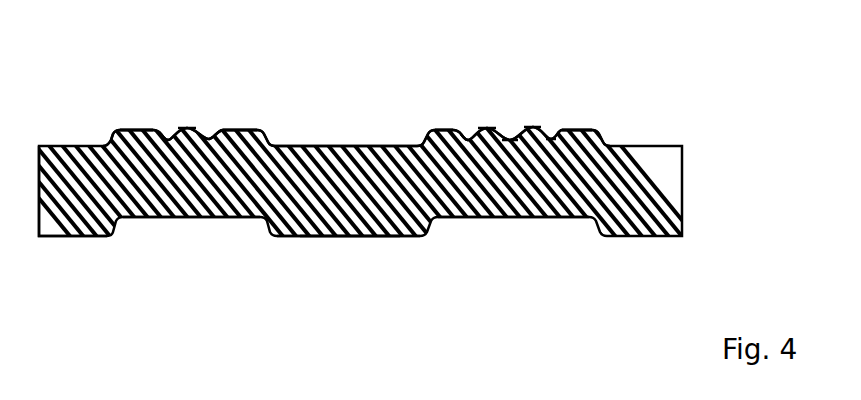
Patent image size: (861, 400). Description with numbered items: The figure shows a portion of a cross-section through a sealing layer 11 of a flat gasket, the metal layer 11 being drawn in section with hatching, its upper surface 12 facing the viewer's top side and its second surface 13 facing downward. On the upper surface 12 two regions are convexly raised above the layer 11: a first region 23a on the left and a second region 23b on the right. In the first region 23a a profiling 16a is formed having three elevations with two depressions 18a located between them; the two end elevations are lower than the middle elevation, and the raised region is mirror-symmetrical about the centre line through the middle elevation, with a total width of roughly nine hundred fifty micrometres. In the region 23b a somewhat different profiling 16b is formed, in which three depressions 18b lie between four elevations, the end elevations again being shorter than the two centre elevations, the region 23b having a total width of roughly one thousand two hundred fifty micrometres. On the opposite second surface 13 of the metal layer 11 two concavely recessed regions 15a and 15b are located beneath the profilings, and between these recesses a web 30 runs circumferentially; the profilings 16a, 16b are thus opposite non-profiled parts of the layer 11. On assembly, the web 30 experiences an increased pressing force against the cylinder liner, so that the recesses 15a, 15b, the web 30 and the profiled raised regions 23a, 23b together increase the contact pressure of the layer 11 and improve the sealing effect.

The metal layer 11 is at (287, 226).
The top surface of carrier 12 is at (326, 146).
The second surface 13 is at (63, 237).
The web 30 is at (338, 236).
The concavely recessed region 15a is at (232, 218).
The concavely recessed region 15b is at (463, 218).
The first region 23a is at (190, 130).
The region 23b is at (528, 129).
The profiling 16a is at (237, 129).
The profiling 16b is at (577, 129).
The depression 18a is at (168, 139).
The depression 18b is at (466, 139).